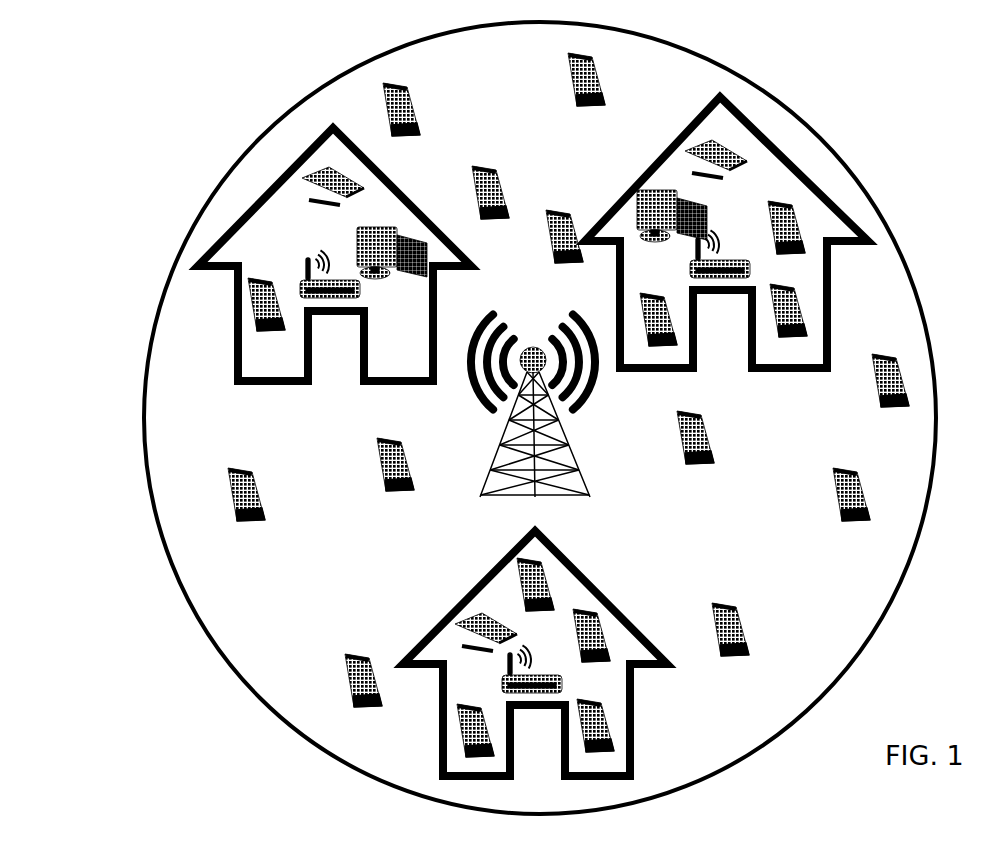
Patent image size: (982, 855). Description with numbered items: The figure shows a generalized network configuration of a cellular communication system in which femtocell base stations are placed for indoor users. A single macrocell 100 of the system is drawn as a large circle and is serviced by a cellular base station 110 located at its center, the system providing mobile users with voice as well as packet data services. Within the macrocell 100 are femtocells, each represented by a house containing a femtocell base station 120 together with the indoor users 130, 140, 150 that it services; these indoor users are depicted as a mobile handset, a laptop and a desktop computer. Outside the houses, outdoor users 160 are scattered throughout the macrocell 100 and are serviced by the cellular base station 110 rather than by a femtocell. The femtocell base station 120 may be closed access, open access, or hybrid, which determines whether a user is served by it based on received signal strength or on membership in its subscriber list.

The macrocell 100 is at (190, 186).
The base station 110 is at (533, 421).
The femtocell base station 120 is at (333, 294).
The indoor user 130 is at (272, 320).
The indoor user 140 is at (347, 194).
The indoor user 150 is at (392, 269).
The outdoor user 160 is at (248, 511).